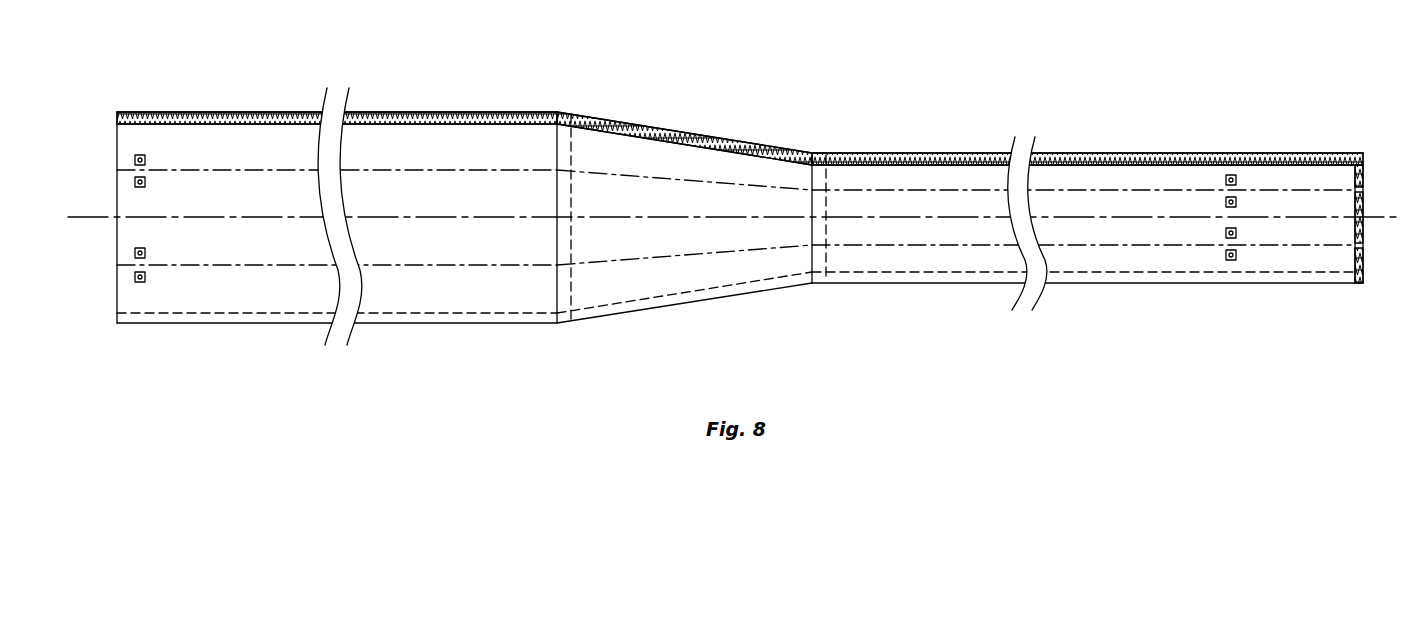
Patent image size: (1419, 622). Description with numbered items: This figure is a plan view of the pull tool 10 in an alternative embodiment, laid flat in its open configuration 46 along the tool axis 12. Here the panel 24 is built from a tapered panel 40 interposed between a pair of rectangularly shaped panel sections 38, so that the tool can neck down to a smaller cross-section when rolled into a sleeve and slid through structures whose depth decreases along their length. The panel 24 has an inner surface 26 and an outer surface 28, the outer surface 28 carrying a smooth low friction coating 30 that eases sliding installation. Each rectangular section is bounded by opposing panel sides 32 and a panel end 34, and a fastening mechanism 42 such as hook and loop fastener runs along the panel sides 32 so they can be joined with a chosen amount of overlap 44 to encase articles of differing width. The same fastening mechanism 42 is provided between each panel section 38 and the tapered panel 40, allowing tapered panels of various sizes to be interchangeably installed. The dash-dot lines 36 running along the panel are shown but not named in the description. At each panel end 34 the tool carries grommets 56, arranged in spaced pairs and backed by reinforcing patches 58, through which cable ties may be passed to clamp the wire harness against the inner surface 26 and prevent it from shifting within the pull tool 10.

The pull tool 10 is at (736, 192).
The open configuration 46 is at (736, 222).
The tool axis 12 is at (82, 215).
The panel 24 is at (400, 297).
The inner surface 26 is at (745, 268).
The outer surface 28 is at (684, 316).
The low friction coating 30 is at (690, 278).
The panel sides 32 is at (920, 152).
The panel ends 34 is at (117, 142).
The channel / core lines 36 is at (213, 170).
The rectangularly shaped panel sections 38 is at (465, 323).
The tapered panel 40 is at (645, 305).
The fastening mechanism 42 is at (413, 112).
The overlap 44 is at (580, 108).
The grommets 56 is at (133, 277).
The reinforcing patches 58 is at (141, 262).